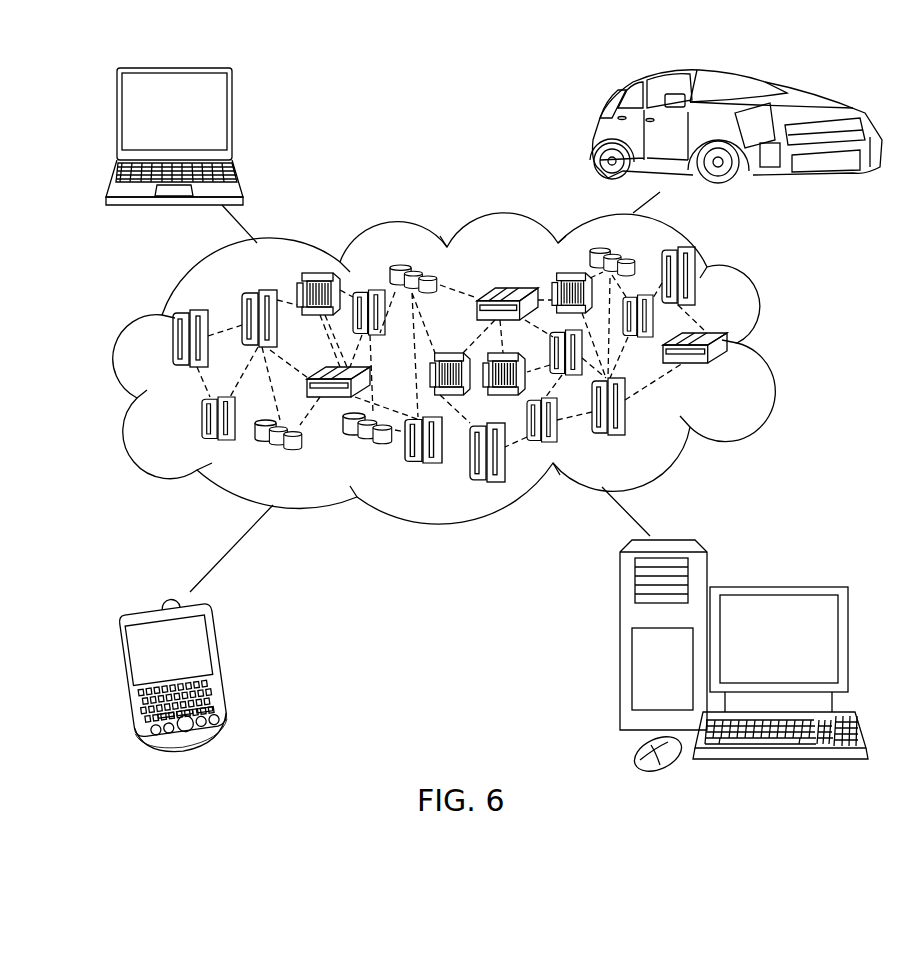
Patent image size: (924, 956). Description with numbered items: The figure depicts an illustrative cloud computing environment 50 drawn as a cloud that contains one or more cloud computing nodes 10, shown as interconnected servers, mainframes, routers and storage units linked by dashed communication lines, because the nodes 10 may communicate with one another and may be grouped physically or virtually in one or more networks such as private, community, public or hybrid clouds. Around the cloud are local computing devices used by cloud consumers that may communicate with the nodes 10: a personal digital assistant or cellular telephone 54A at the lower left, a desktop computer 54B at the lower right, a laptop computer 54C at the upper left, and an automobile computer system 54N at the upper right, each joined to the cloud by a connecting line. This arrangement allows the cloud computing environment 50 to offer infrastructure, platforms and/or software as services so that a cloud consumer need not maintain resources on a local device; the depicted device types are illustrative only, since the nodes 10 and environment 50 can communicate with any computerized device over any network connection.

The cloud computing node 10 is at (736, 373).
The cloud computing environment 50 is at (777, 345).
The personal digital assistant or cellular telephone 54A is at (223, 665).
The desktop computer 54B is at (775, 585).
The laptop computer 54C is at (232, 118).
The automobile computer system 54N is at (594, 132).